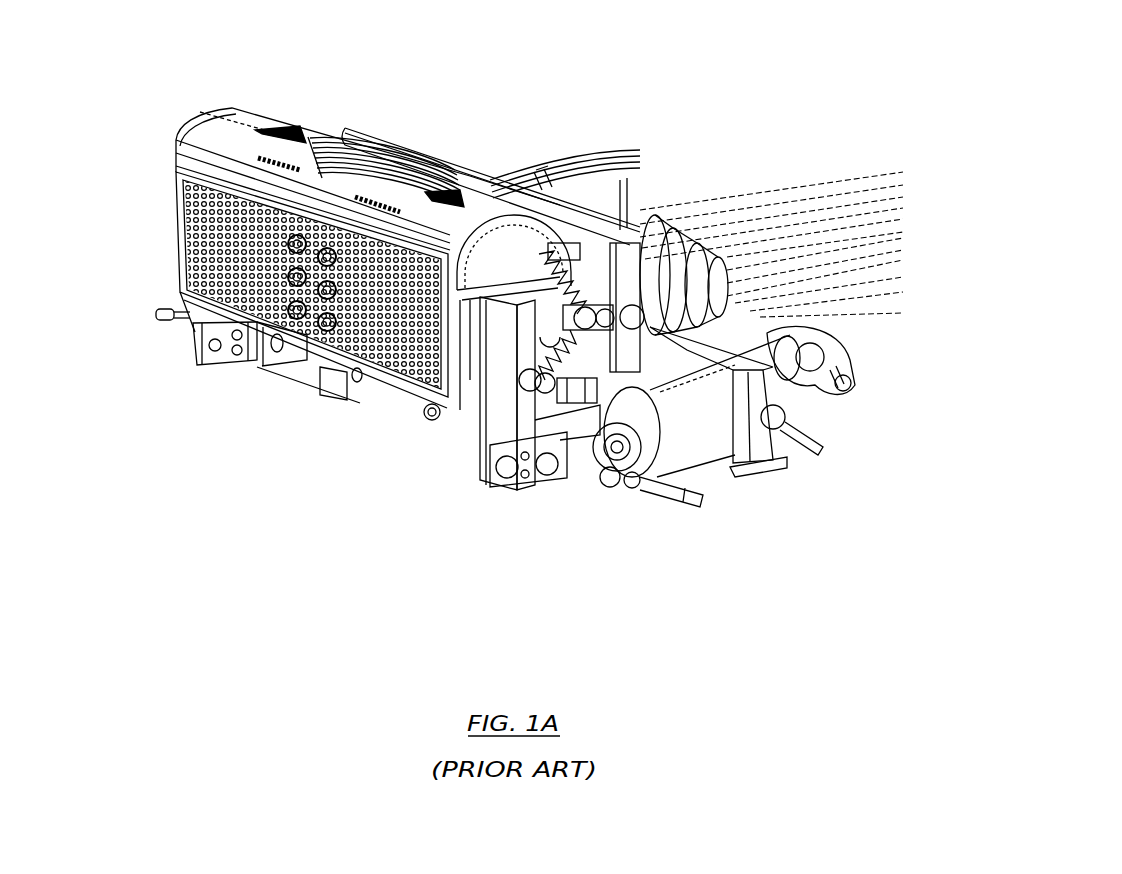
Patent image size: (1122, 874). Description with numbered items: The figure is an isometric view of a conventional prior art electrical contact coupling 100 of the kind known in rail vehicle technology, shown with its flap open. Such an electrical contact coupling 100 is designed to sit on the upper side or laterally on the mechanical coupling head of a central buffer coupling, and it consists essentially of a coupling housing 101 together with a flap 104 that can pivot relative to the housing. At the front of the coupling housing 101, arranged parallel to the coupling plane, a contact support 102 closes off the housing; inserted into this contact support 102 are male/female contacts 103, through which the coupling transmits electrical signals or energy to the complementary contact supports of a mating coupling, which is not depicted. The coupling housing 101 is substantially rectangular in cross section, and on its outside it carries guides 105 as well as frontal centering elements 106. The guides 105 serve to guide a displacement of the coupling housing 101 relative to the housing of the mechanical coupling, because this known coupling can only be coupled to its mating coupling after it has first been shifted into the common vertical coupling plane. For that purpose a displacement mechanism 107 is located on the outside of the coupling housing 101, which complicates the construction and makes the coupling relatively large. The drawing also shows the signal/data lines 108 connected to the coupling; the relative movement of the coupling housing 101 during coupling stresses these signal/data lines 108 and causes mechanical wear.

The electrical contact coupling 100 is at (530, 48).
The coupling housing 101 is at (467, 385).
The contact support 102 is at (407, 363).
The male/female contacts 103 is at (260, 283).
The flap 104 is at (512, 258).
The guides 105 is at (278, 343).
The frontal centering elements 106 is at (172, 318).
The displacement mechanism 107 is at (772, 497).
The signal/data lines 108 is at (722, 223).